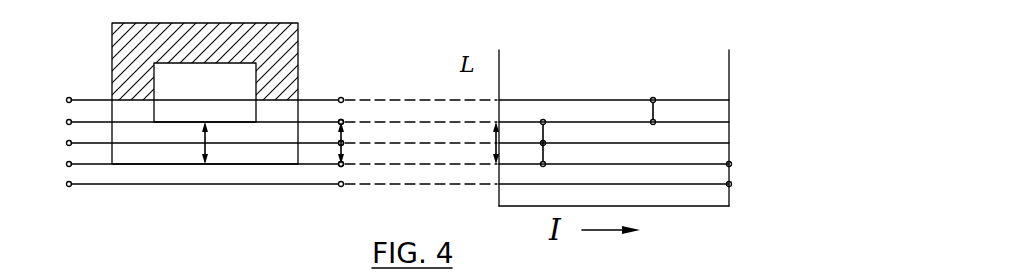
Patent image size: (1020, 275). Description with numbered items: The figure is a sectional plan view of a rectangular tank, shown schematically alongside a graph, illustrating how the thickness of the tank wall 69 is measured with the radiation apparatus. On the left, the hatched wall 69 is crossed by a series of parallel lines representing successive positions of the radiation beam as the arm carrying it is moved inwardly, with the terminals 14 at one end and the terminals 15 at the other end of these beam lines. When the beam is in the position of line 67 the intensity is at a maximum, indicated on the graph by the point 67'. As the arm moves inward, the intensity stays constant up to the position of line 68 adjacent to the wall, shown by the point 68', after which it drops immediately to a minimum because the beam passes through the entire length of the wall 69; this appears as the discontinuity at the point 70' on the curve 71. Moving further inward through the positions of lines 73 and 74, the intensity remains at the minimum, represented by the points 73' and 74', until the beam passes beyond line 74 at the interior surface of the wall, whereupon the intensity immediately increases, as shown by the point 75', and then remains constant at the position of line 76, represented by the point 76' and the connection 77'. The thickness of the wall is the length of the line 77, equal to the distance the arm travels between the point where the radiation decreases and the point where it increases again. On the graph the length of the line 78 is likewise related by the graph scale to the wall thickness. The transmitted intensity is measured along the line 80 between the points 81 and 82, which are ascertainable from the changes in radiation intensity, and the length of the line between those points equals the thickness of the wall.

The input terminals 14 is at (66, 100).
The output terminals 15 is at (352, 78).
The line 67 is at (177, 185).
The line 68 is at (177, 164).
The wall 69 is at (293, 43).
The line 73 is at (177, 142).
The line 74 is at (177, 120).
The line 76 is at (204, 84).
The line 77 is at (194, 170).
The line 78 is at (494, 152).
The line 80 is at (344, 141).
The point 81 is at (344, 162).
The point 82 is at (344, 120).
The curve 71 is at (616, 162).
The point 67' is at (634, 185).
The point 68' is at (745, 156).
The point 70' is at (562, 174).
The point 73' is at (614, 135).
The point 74' is at (614, 113).
The point 75' is at (670, 111).
The point 76' is at (614, 83).
The connection 77' is at (528, 143).